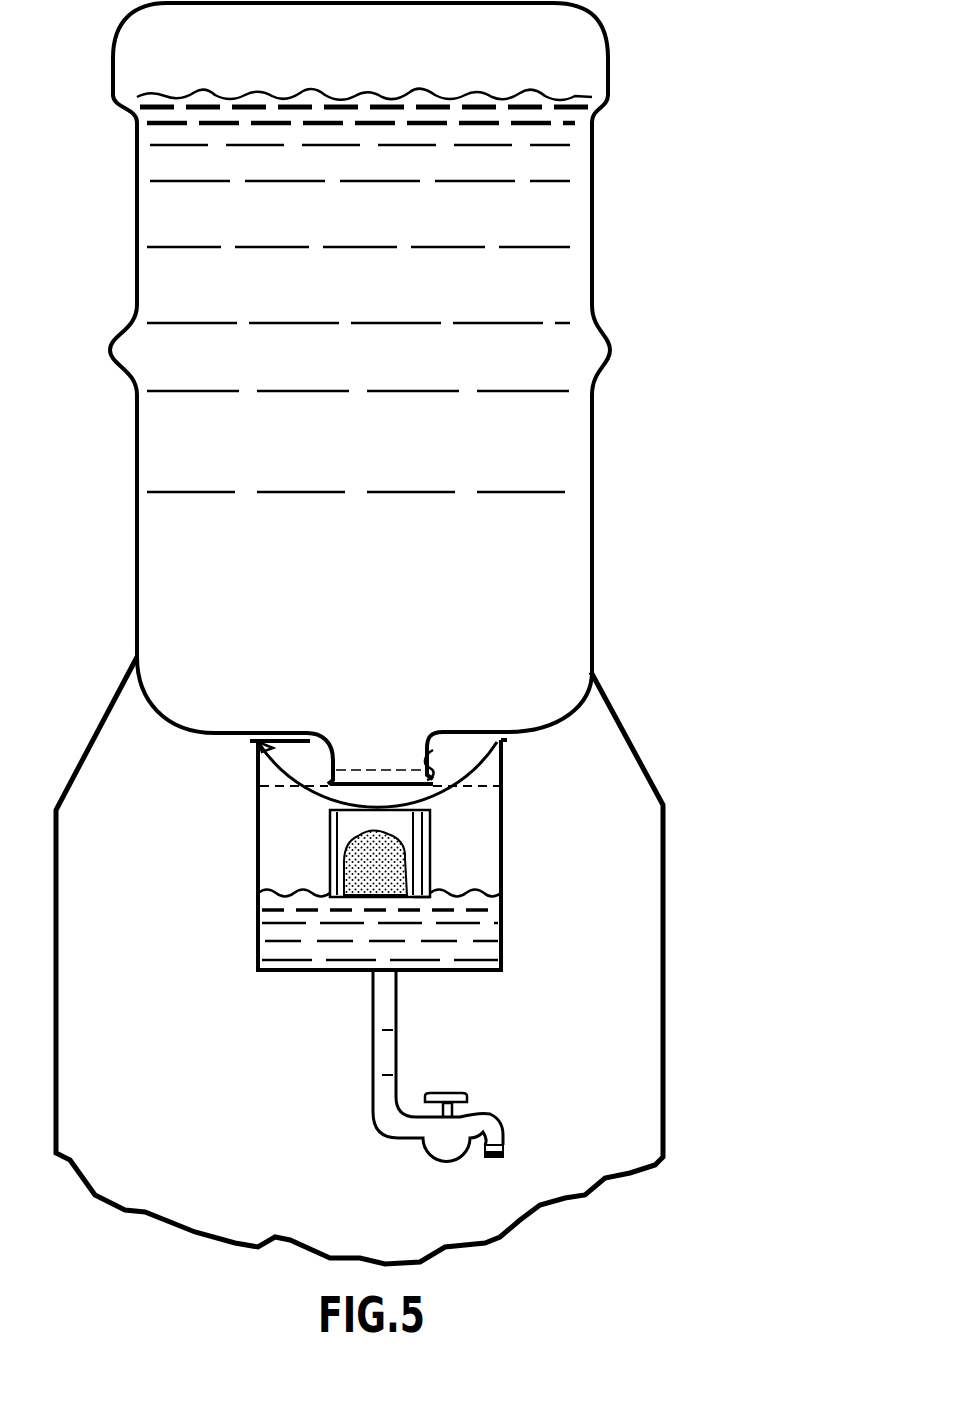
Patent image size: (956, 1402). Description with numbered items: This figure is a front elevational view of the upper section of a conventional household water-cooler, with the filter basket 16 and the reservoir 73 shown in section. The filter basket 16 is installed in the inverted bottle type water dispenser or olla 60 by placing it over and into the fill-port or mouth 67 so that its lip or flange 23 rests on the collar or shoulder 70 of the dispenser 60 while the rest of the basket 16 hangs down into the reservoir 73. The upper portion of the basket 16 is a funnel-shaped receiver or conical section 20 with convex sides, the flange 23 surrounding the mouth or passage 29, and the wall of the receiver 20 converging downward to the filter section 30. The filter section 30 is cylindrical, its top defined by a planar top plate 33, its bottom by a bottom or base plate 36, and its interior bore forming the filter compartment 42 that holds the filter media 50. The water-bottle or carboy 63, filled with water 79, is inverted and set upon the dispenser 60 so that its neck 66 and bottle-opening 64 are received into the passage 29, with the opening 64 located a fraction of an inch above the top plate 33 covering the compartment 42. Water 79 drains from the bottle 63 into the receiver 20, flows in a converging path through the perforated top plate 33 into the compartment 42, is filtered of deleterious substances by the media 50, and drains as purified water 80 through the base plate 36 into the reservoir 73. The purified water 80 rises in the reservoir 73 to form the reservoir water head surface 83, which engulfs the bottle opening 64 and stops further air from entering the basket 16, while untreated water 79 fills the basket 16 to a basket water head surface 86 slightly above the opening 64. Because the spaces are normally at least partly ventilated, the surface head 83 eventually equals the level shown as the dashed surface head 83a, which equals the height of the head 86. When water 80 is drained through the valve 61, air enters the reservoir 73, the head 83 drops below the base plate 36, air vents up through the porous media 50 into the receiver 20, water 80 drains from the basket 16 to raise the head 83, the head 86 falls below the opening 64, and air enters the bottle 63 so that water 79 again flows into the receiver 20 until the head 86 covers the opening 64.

The water-bottle or carboy 63 is at (610, 68).
The water 79 is at (583, 238).
The collar or shoulder 70 is at (217, 735).
The fill-port or mouth 67 is at (288, 733).
The basket water head surface 86 is at (303, 782).
The bottle-opening or mouth 64 is at (408, 740).
The neck 66 is at (437, 756).
The inverted bottle type water dispenser or olla 60 is at (668, 770).
The filter basket 16 is at (280, 836).
The receiver or conical section 20 is at (503, 782).
The lip or flange 23 is at (505, 742).
The mouth or passage 29 is at (262, 747).
The surface head 83a is at (262, 806).
The reservoir 73 is at (503, 840).
The reservoir water head surface 83 is at (490, 893).
The purified water 80 is at (483, 933).
The top plate 33 is at (358, 812).
The filter media 50 is at (348, 845).
The filter compartment 42 is at (424, 835).
The filter section 30 is at (440, 865).
The bottom or base plate 36 is at (420, 897).
The valve 61 is at (482, 1117).